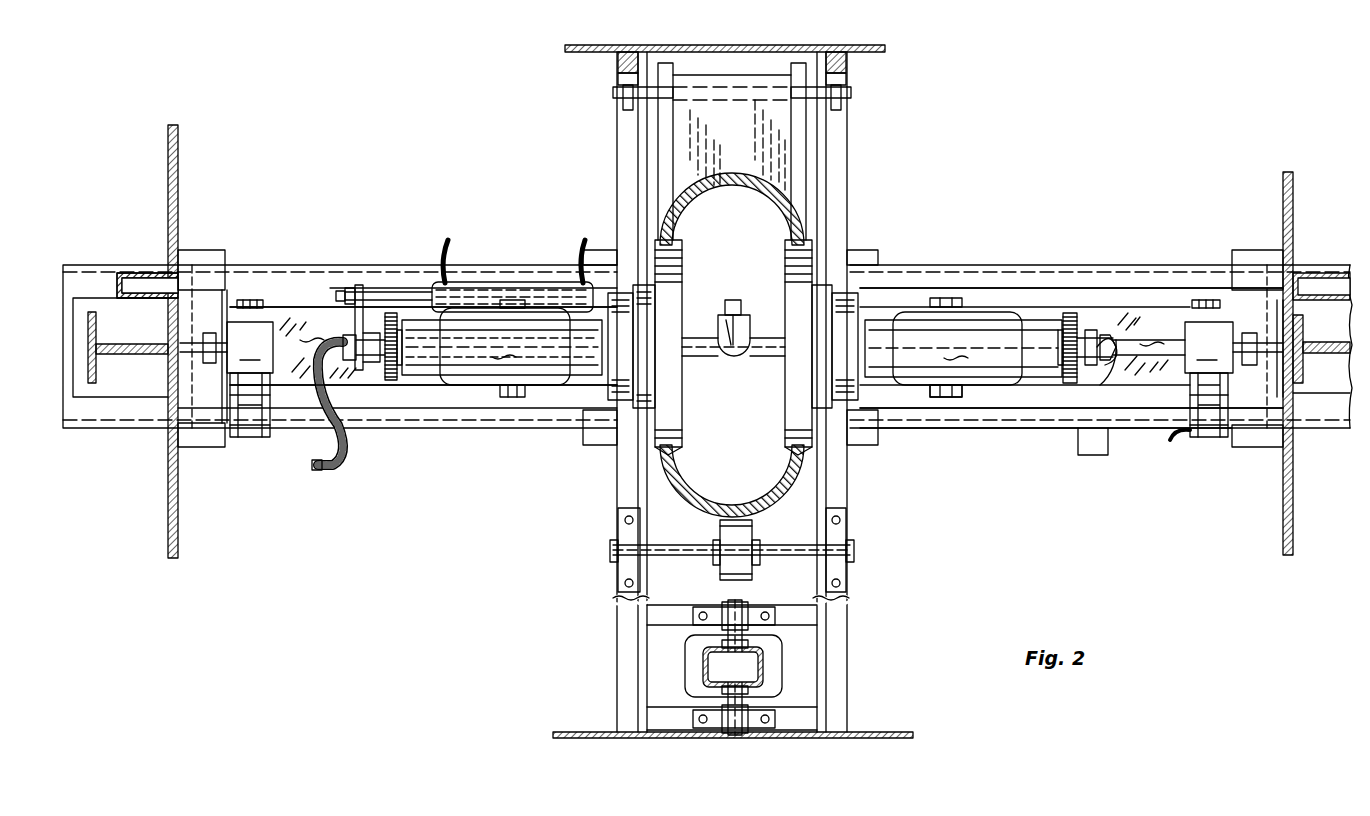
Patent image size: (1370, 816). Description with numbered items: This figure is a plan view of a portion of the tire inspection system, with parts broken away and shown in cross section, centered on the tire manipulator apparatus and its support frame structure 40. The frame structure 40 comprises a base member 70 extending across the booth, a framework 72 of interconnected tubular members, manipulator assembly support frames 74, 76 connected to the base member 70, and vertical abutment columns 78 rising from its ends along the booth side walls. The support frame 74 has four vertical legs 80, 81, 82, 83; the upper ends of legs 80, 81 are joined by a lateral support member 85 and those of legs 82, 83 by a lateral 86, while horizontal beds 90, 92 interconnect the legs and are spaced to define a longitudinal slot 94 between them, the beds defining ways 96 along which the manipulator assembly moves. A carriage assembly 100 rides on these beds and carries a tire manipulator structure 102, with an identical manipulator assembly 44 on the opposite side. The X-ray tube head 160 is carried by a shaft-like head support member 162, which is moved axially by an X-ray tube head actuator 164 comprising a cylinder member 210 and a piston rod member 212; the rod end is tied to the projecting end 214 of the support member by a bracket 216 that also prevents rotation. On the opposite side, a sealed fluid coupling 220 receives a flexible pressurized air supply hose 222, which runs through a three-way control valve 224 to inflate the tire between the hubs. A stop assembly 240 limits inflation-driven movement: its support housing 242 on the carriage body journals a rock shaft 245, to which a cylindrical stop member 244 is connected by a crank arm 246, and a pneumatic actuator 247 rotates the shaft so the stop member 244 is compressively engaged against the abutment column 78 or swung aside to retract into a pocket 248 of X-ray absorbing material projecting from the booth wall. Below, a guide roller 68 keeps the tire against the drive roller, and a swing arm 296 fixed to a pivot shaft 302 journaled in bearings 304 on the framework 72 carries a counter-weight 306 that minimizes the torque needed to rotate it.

The support frame structure 40 is at (450, 428).
The manipulator assembly 44 is at (950, 288).
The guide roller 68 is at (755, 535).
The base member 70 is at (970, 430).
The framework 72 is at (866, 602).
The manipulator assembly support frame 74 is at (198, 240).
The manipulator assembly support frame 76 is at (1125, 435).
The vertical abutment column 78 is at (92, 384).
The vertical leg 80 is at (214, 245).
The vertical leg 81 is at (201, 460).
The vertical leg 82 is at (591, 230).
The vertical leg 83 is at (589, 456).
The lateral support member 85 is at (226, 327).
The lateral 86 is at (596, 382).
The horizontal bed 90 is at (423, 261).
The horizontal bed 92 is at (423, 433).
The longitudinal slot 94 is at (309, 406).
The way 96 is at (422, 355).
The carriage assembly 100 is at (318, 347).
The tire manipulator structure 102 is at (502, 346).
The X-ray tube head 160 is at (730, 356).
The head support member 162 is at (698, 343).
The X-ray tube head actuator 164 is at (478, 283).
The cylinder member 210 is at (535, 297).
The piston rod member 212 is at (385, 300).
The projecting end 214 is at (381, 360).
The bracket 216 is at (366, 290).
The sealed fluid coupling 220 is at (1095, 350).
The pressurized air supply hose 222 is at (1097, 368).
The three-way control valve 224 is at (1098, 457).
The stop assembly 240 is at (1177, 382).
The support housing 242 is at (250, 347).
The stop member 244 is at (132, 368).
The rock shaft 245 is at (217, 386).
The crank arm 246 is at (231, 310).
The double acting pneumatic actuator 247 is at (260, 437).
The pocket 248 is at (128, 264).
The swing arm 296 is at (705, 660).
The pivot shaft 302 is at (745, 725).
The bearing 304 is at (722, 605).
The counter-weight 306 is at (780, 662).